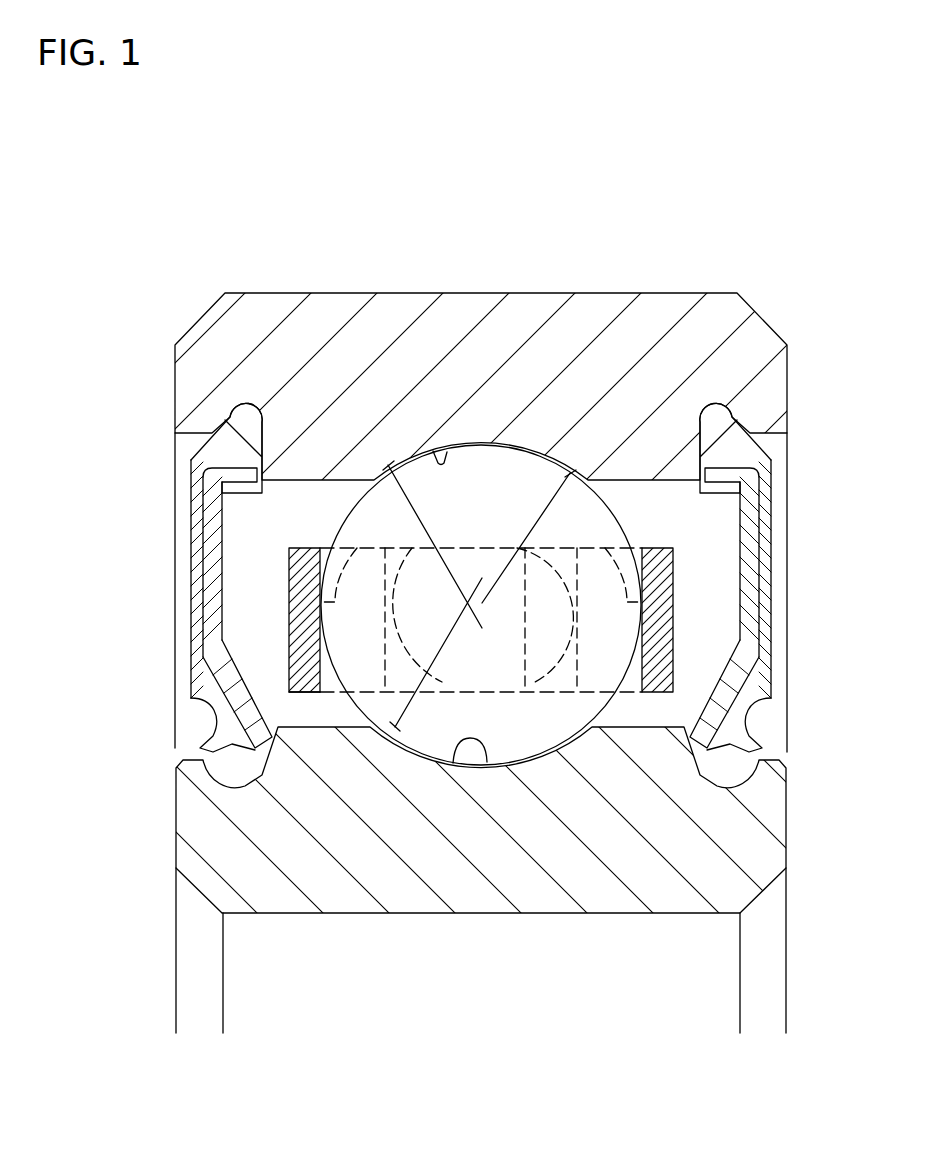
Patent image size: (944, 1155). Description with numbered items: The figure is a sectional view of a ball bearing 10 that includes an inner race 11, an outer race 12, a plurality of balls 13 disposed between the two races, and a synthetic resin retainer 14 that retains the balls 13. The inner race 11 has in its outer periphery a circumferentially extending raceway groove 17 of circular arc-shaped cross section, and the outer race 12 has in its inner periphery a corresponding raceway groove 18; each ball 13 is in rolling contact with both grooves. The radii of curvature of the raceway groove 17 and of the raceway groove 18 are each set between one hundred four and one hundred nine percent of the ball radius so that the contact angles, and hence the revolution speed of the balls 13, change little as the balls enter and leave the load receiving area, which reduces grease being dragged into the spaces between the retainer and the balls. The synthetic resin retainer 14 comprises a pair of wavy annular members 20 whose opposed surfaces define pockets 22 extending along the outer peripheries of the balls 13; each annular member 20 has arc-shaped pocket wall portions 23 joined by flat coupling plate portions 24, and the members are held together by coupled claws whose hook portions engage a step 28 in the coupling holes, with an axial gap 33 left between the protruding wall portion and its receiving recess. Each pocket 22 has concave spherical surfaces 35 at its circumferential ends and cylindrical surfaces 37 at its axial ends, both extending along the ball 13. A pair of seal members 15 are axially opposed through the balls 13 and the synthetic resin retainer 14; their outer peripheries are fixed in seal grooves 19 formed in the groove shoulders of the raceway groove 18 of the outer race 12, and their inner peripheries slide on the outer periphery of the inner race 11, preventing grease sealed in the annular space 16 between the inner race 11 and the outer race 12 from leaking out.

The ball bearing 10 is at (168, 828).
The inner race 11 is at (188, 808).
The outer race 12 is at (190, 383).
The balls 13 is at (463, 613).
The synthetic resin retainer 14 is at (280, 593).
The seal members 15 is at (469, 483).
The annular space 16 is at (267, 677).
The raceway groove 17 is at (460, 742).
The raceway groove 18 is at (437, 456).
The seal grooves 19 is at (258, 412).
The annular members 20 is at (289, 641).
The pockets 22 is at (323, 692).
The pocket wall portions 23 is at (673, 592).
The coupling plate portion 24 is at (548, 548).
The step 28 is at (560, 700).
The axial gap 33 is at (530, 548).
The concave spherical surfaces 35 is at (392, 740).
The cylindrical surfaces 37 is at (695, 712).